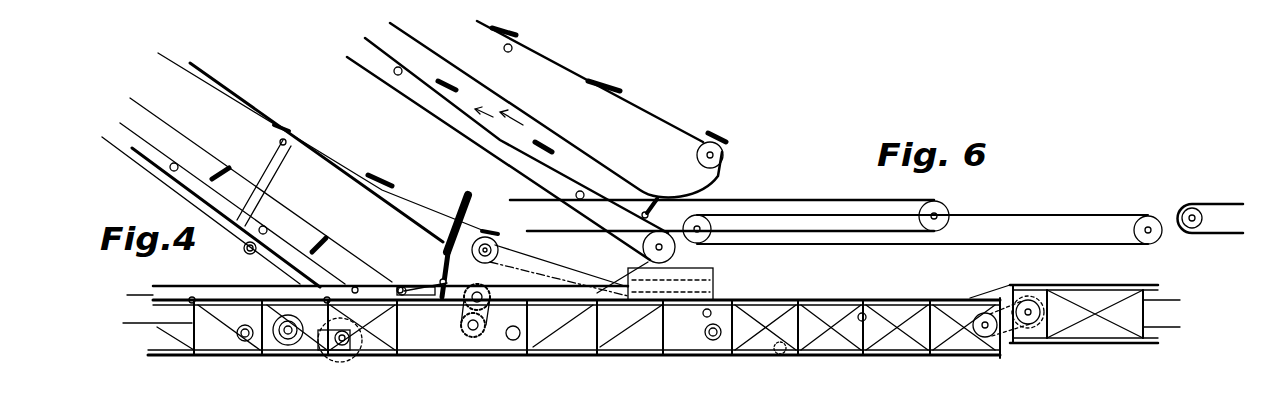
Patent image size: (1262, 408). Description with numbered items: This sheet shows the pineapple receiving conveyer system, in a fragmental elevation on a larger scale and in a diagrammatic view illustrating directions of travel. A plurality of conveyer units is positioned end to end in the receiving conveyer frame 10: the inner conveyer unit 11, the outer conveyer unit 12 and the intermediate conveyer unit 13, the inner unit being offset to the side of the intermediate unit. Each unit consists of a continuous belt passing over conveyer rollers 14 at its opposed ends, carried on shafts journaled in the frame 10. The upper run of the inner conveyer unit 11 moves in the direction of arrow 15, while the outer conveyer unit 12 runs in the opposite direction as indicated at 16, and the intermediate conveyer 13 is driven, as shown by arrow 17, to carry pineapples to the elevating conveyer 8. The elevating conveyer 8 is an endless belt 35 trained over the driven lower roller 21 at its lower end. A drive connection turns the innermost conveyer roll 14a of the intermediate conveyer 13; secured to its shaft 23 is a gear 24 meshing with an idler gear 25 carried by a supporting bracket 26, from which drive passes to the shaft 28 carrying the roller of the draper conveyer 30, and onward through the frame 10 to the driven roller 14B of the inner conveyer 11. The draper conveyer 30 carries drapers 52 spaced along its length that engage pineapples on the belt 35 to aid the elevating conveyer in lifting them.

In FIG. 4, the elevating conveyer 8 is at (250, 102).
In FIG. 4, the receiving conveyer frame 10 is at (237, 352).
In FIG. 6, the inner conveyer unit 11 is at (720, 199).
In FIG. 6, the outer conveyer unit 12 is at (1238, 203).
In FIG. 6, the intermediate conveyer unit 13 is at (1120, 208).
In FIG. 6, the conveyer rollers 14 is at (1157, 240).
In FIG. 6, the innermost conveyer roll of the intermediate conveyer 14a is at (707, 238).
In FIG. 6, the driven roller of the inner conveyer 14B is at (941, 207).
In FIG. 6, the arrow 15 is at (817, 192).
In FIG. 6, the arrow 16 is at (1219, 186).
In FIG. 6, the arrow 17 is at (1077, 207).
In FIG. 4, the lower roller 21 is at (645, 249).
In FIG. 4, the shaft 23 is at (693, 221).
In FIG. 4, the gear 24 is at (483, 338).
In FIG. 4, the idler gear 25 is at (490, 310).
In FIG. 4, the supporting bracket 26 is at (508, 280).
In FIG. 4, the shaft 28 is at (723, 155).
In FIG. 4, the draper conveyer 30 is at (660, 113).
In FIG. 4, the endless belt 35 is at (368, 38).
In FIG. 4, the drapers 52 is at (518, 33).